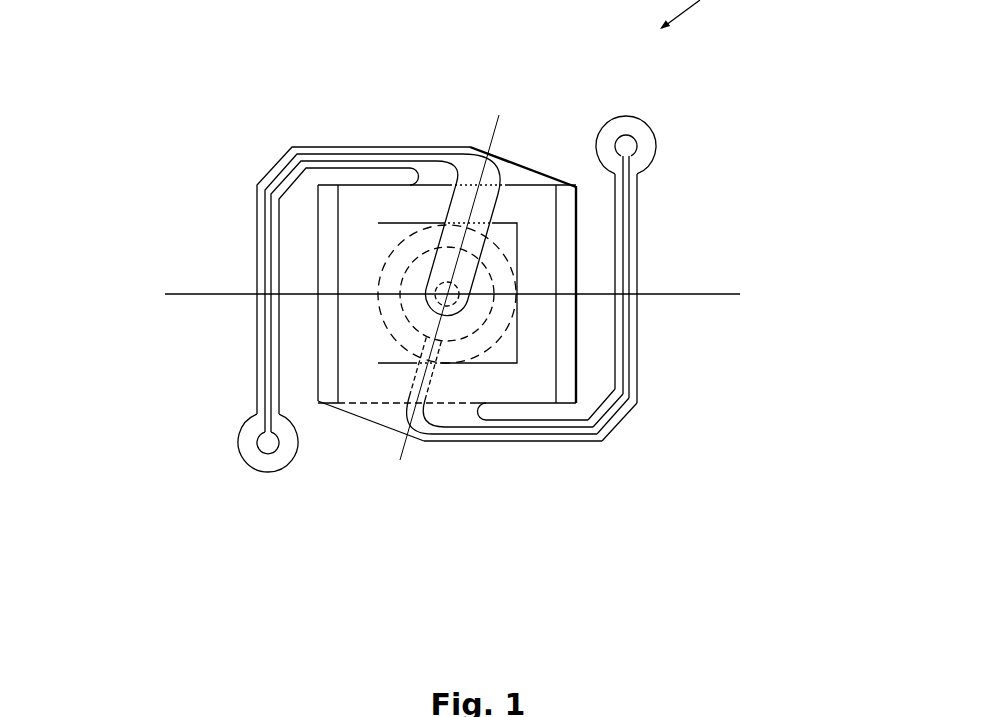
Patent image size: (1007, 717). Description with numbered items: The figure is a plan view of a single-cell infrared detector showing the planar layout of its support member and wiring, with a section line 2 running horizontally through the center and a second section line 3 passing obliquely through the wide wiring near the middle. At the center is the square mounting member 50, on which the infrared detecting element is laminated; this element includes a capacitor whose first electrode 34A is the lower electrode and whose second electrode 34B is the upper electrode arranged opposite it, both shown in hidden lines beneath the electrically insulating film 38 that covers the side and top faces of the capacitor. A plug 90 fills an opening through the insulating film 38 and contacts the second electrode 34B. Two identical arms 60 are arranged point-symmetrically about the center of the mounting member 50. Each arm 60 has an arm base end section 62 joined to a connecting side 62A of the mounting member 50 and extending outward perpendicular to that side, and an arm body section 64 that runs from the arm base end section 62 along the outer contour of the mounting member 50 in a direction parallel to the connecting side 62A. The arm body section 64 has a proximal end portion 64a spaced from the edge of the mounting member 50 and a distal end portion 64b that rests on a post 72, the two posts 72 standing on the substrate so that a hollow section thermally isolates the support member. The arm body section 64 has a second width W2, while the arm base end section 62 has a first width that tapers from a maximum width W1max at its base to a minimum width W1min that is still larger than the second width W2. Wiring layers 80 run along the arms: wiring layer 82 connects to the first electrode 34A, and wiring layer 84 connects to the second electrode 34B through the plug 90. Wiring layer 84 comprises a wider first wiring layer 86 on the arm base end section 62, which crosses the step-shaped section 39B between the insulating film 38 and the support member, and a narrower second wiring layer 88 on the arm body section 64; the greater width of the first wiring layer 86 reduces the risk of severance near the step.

The section line 2 is at (713, 294).
The section line 3 is at (499, 114).
The first electrode 34A is at (508, 342).
The second electrode 34B is at (492, 280).
The electrically insulating film 38 is at (357, 207).
The step-shaped section 39B is at (528, 184).
The mounting member 50 is at (317, 242).
The arm 60 is at (258, 378).
The arm base end section 62 is at (349, 146).
The connecting side 62A is at (330, 444).
The arm body section 64 is at (560, 350).
The proximal end portion 64a is at (548, 446).
The distal end portion 64b is at (638, 203).
The post 72 is at (656, 150).
The wiring layers 80 is at (444, 231).
The wiring layer 82 is at (620, 413).
The wiring layer 84 is at (548, 34).
The first wiring layer 86 is at (497, 200).
The second wiring layer 88 is at (386, 145).
The plug 90 is at (345, 330).
The minimum width W1min is at (412, 462).
The maximum width W1max is at (315, 405).
The second width W2 is at (583, 395).